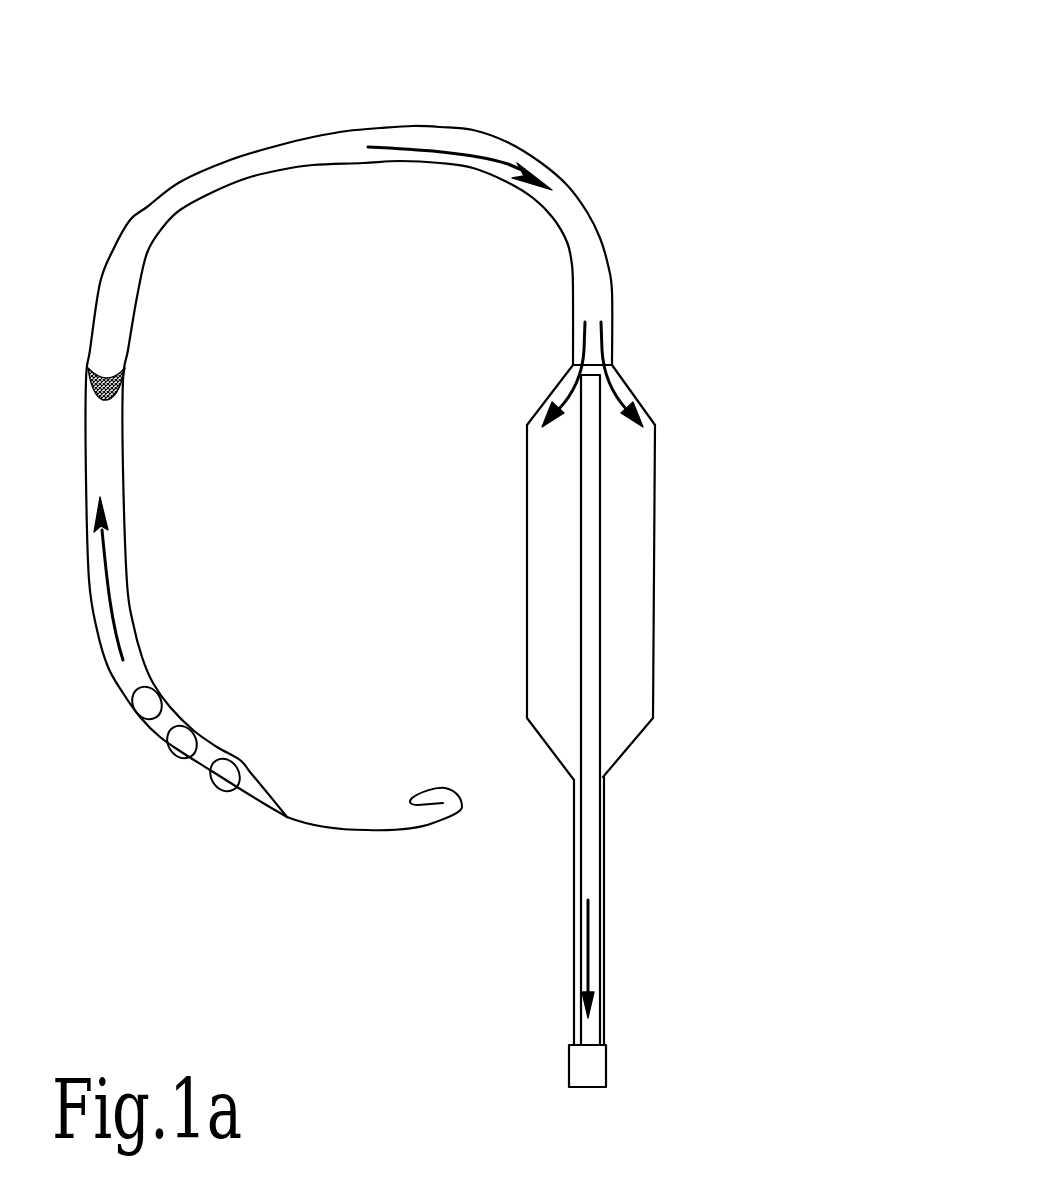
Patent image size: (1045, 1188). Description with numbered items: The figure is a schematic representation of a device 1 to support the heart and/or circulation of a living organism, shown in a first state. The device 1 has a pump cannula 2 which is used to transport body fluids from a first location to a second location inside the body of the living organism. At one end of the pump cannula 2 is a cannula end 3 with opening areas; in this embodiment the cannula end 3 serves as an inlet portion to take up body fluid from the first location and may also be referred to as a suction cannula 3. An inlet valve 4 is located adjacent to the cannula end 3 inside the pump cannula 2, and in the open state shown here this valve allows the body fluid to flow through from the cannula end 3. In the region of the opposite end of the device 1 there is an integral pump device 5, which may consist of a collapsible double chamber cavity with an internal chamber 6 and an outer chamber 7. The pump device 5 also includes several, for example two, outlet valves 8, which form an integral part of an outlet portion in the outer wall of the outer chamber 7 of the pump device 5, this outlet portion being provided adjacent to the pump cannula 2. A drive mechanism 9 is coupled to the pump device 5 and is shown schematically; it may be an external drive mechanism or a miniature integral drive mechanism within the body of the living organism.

The device 1 is at (602, 88).
The pump cannula 2 is at (180, 183).
The cannula end 3 is at (193, 773).
The inlet valve 4 is at (118, 393).
The pump device 5 is at (672, 618).
The internal chamber 6 is at (590, 597).
The outer chamber 7 is at (535, 523).
The outlet valves 8 is at (552, 400).
The drive mechanism 9 is at (593, 1072).